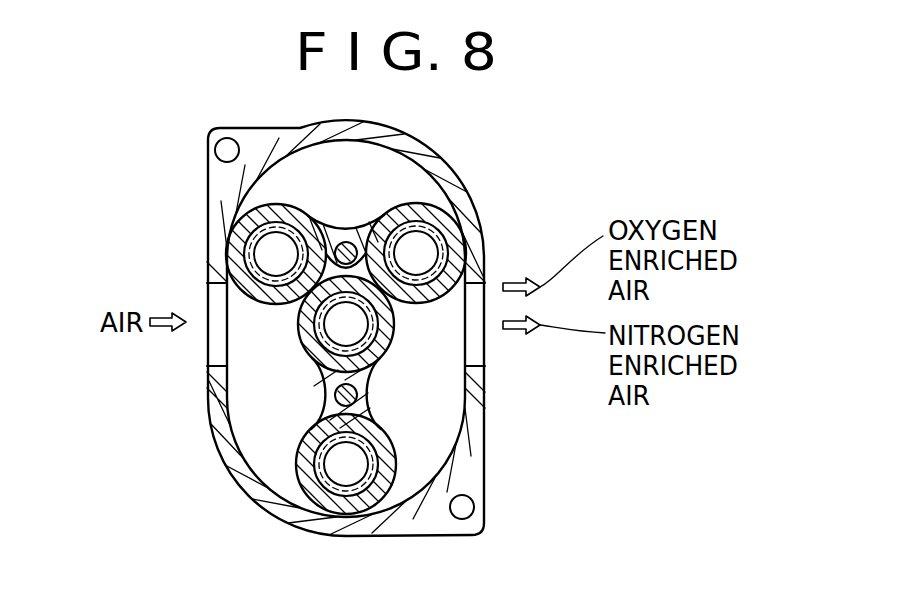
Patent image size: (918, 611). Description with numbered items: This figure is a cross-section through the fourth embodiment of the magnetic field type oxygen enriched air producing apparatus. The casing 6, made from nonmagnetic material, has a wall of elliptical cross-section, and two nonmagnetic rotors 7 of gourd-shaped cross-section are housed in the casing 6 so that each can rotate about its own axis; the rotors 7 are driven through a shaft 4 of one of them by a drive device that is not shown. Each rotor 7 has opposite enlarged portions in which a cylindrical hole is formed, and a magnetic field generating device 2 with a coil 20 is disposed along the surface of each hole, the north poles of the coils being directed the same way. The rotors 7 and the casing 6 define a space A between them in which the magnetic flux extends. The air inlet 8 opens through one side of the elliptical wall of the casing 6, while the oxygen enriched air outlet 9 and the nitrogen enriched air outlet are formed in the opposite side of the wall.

The magnetic field generating device 2 is at (274, 208).
The shaft 4 is at (357, 250).
The casing 6 is at (237, 193).
The rotor 7 is at (430, 228).
The air inlet 8 is at (219, 286).
The oxygen enriched air outlet 9 is at (474, 287).
The coil 20 is at (398, 230).
The space A is at (440, 418).